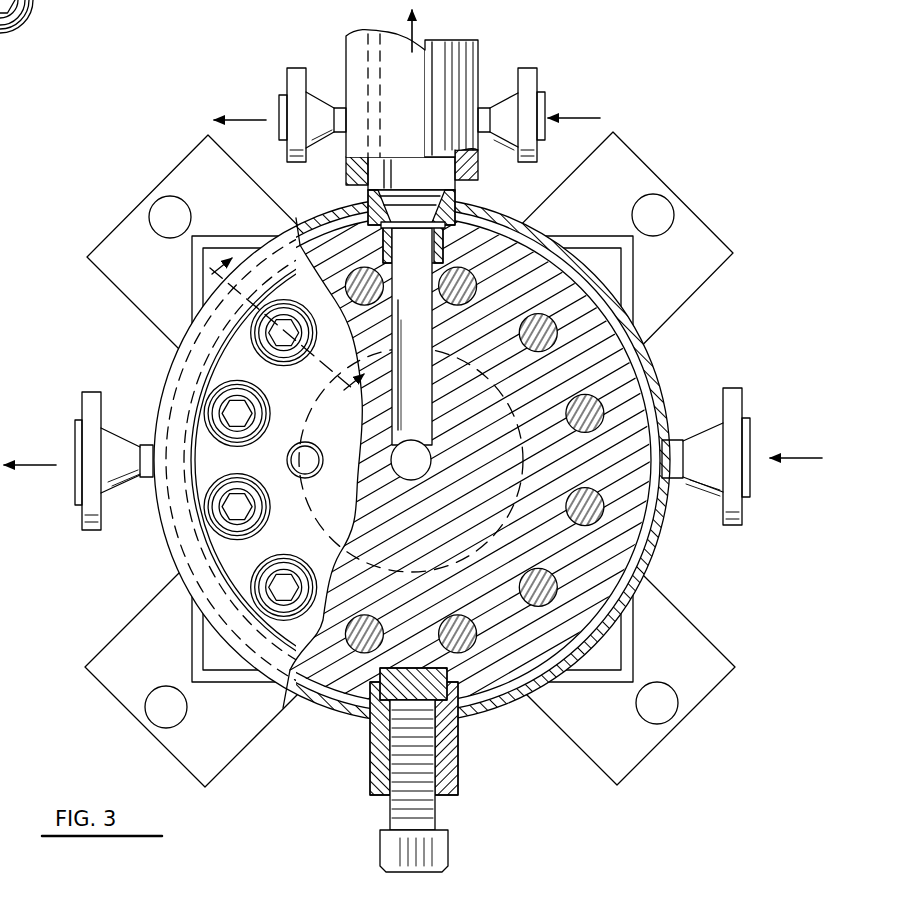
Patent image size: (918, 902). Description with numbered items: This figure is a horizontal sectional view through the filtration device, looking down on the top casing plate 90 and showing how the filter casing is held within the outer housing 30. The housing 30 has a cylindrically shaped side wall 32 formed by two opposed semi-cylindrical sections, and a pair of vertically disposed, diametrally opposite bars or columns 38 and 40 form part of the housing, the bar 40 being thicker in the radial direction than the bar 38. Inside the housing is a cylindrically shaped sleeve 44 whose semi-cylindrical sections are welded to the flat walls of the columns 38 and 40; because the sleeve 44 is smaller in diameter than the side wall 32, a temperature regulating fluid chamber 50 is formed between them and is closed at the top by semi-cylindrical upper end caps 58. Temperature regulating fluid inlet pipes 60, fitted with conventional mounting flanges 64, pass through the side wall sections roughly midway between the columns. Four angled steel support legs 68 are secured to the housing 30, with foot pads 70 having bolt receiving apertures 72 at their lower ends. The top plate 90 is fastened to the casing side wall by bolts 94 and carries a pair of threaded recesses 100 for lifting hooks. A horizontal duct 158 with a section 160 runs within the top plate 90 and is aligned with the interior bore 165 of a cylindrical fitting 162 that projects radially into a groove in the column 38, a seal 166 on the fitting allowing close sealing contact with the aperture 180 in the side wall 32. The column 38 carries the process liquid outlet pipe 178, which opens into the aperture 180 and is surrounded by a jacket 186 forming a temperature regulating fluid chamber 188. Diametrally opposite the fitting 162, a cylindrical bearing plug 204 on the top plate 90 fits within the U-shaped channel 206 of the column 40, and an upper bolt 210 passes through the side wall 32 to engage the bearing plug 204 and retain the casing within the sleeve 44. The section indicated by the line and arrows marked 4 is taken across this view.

The outer housing 30 is at (486, 690).
The side wall 32 is at (650, 558).
The bar 38 is at (452, 204).
The bar 40 is at (456, 792).
The sleeve 44 is at (308, 705).
The temperature regulating fluid chamber 50 is at (354, 705).
The upper end cap 58 is at (178, 385).
The temperature regulating fluid inlet pipe 60 is at (148, 445).
The mounting flange 64 is at (90, 402).
The support leg 68 is at (196, 270).
The foot pad 70 is at (206, 150).
The bolt receiving aperture 72 is at (172, 217).
The top casing plate 90 is at (646, 322).
The bolt 94 is at (248, 408).
The recess 100 is at (305, 444).
The duct 158 is at (428, 372).
The section 160 is at (420, 470).
The fitting 162 is at (522, 238).
The interior bore 165 is at (412, 255).
The seal 166 is at (405, 210).
The process liquid outlet pipe 178 is at (352, 176).
The aperture 180 is at (486, 163).
The jacket 186 is at (352, 52).
The temperature regulating fluid chamber 188 is at (370, 162).
The bearing plug 204 is at (400, 668).
The channel 206 is at (500, 672).
The upper bolt 210 is at (384, 840).
The section line 4 is at (292, 309).